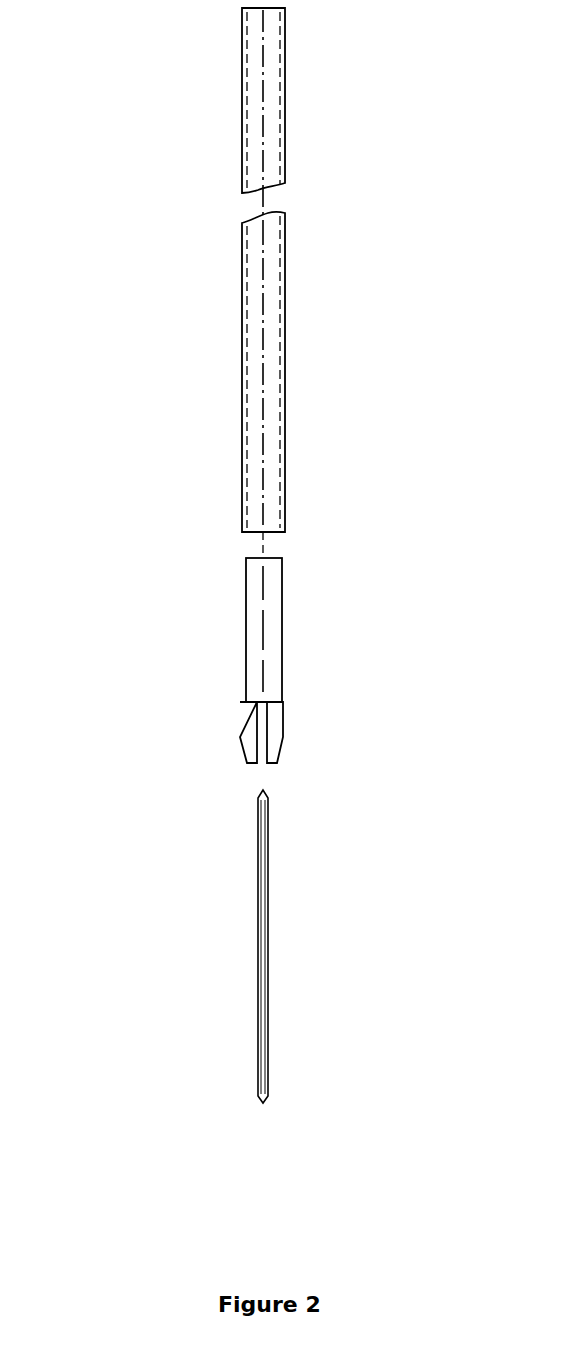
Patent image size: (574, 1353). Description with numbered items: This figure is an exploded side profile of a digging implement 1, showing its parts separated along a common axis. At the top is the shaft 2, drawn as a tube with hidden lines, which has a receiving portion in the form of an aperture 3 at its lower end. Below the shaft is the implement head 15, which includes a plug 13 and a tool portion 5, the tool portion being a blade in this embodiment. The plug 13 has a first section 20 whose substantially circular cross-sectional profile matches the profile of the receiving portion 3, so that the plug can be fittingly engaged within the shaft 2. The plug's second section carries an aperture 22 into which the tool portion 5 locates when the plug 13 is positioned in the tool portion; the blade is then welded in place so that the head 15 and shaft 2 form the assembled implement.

The digging implement 1 is at (184, 129).
The shaft 2 is at (285, 378).
The aperture 3 is at (238, 548).
The plug 13 is at (290, 657).
The first section 20 is at (272, 583).
The aperture 22 is at (254, 737).
The implement head 15 is at (184, 909).
The tool portion 5 is at (282, 981).